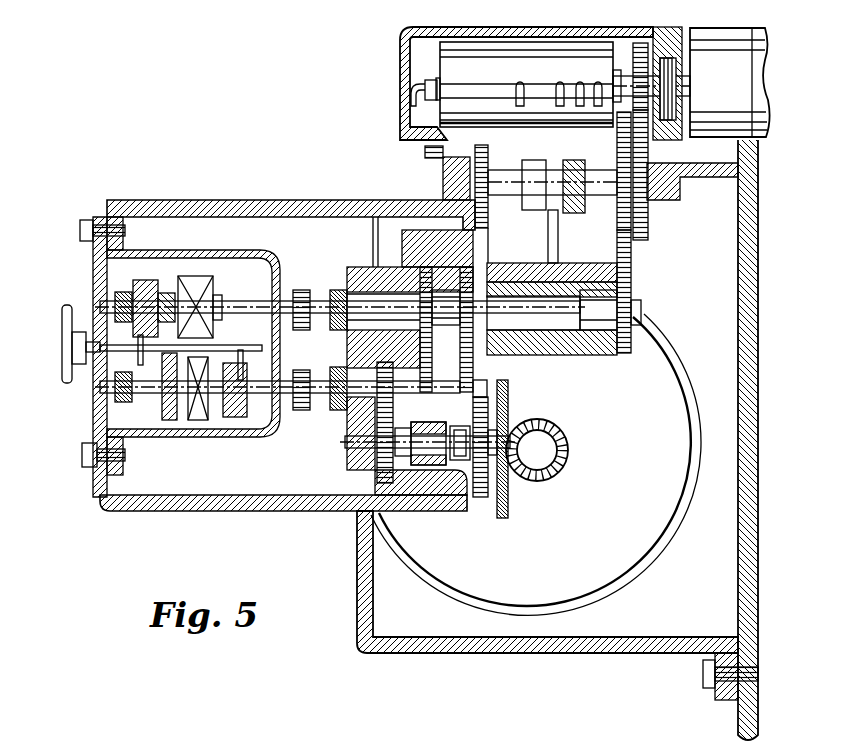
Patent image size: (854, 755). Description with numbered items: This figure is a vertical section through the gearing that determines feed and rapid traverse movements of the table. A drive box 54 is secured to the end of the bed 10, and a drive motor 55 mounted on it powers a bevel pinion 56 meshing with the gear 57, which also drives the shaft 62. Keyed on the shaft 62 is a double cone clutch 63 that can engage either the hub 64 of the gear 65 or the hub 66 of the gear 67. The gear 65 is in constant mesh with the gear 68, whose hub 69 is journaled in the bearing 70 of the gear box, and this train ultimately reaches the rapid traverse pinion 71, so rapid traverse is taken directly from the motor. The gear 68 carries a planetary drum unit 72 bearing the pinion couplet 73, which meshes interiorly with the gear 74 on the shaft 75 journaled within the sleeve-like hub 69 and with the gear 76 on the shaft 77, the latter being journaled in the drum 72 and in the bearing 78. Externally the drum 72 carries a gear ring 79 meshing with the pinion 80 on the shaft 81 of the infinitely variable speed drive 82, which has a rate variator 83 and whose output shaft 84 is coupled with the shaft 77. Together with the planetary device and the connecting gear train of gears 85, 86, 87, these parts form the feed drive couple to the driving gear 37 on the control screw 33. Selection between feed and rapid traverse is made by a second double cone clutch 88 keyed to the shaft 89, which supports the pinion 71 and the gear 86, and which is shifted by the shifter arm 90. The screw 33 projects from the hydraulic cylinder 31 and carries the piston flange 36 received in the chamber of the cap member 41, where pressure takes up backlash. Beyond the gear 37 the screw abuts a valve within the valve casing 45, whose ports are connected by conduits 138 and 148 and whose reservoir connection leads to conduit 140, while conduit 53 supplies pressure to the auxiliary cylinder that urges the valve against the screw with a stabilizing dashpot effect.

The bed 10 is at (740, 582).
The hydraulic cylinder 31 is at (766, 35).
The control screw 33 is at (678, 82).
The piston flange 36 is at (668, 42).
The driving gear 37 is at (640, 45).
The cap member 41 is at (672, 58).
The valve casing 45 is at (550, 48).
The conduit 53 is at (415, 82).
The drive box 54 is at (640, 653).
The drive motor 55 is at (640, 577).
The bevel pinion 56 is at (568, 450).
The gear 57 is at (508, 490).
The shaft 62 is at (376, 470).
The double cone clutch 63 is at (418, 426).
The hub 64 is at (410, 465).
The gear 65 is at (488, 462).
The hub 66 is at (397, 478).
The gear 67 is at (362, 500).
The gear 68 is at (492, 388).
The hub 69 is at (552, 355).
The bearing 70 is at (595, 354).
The rapid traverse pinion 71 is at (490, 215).
The planetary drum unit 72 is at (418, 265).
The pinion couplet 73 is at (458, 390).
The gear 74 is at (503, 270).
The shaft 75 is at (572, 296).
The gear 76 is at (432, 292).
The shaft 77 is at (365, 295).
The bearing 78 is at (347, 352).
The gear ring 79 is at (375, 252).
The pinion 80 is at (348, 430).
The shaft 81 is at (125, 390).
The infinitely variable speed drive 82 is at (100, 274).
The rate variator 83 is at (62, 340).
The output shaft 84 is at (265, 300).
The gear 85 is at (631, 307).
The gear 86 is at (632, 252).
The gear 87 is at (648, 213).
The double cone clutch 88 is at (572, 210).
The shaft 89 is at (672, 180).
The shifter arm 90 is at (558, 235).
The conduit 138 is at (558, 104).
The conduit 140 is at (578, 106).
The conduit 148 is at (598, 106).